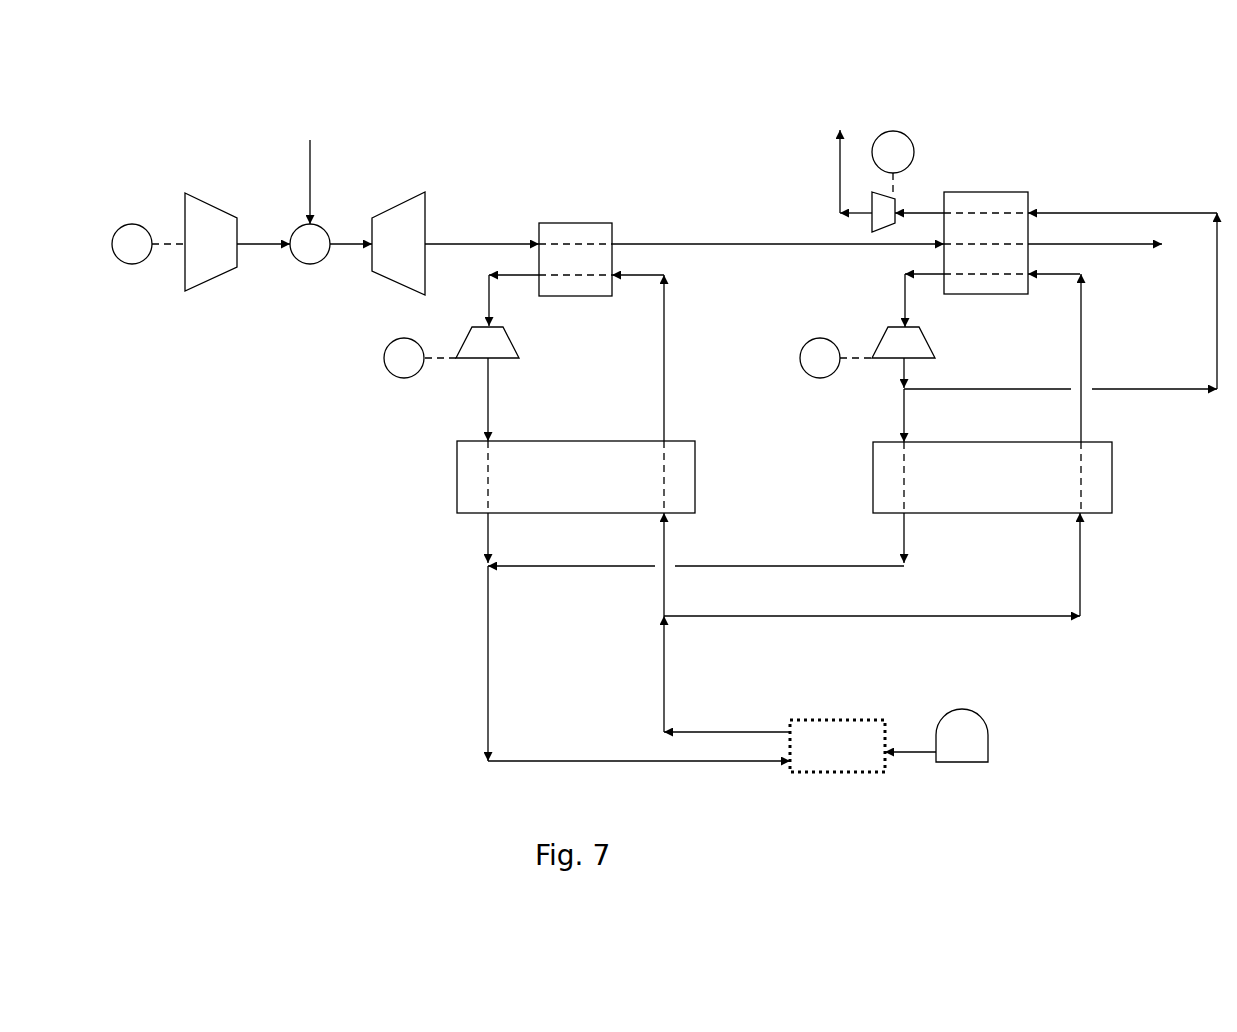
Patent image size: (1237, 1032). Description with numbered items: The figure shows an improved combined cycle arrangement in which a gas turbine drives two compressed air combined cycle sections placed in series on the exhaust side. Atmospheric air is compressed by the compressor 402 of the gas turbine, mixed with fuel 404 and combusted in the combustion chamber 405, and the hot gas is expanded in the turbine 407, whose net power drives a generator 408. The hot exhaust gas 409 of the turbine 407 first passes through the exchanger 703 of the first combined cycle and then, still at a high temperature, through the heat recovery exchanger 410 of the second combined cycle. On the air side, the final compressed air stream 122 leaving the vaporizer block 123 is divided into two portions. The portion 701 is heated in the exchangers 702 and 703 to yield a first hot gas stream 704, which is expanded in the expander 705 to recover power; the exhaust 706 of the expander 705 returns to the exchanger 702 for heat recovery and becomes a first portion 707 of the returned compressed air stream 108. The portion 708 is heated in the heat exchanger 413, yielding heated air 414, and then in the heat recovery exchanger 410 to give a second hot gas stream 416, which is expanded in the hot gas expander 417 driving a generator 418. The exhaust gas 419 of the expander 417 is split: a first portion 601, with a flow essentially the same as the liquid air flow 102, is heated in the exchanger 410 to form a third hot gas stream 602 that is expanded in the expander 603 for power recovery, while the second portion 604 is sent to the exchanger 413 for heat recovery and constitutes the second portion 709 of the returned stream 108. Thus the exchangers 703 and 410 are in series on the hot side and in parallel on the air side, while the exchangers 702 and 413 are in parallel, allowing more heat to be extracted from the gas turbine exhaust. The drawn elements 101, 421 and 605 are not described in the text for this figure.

The feed source 101 is at (967, 720).
The liquid air flow 102 is at (903, 753).
The returned compressed air stream 108 is at (572, 762).
The final compressed air stream 122 is at (667, 688).
The vaporizer block 123 is at (842, 773).
The compressor 402 is at (207, 275).
The fuel 404 is at (309, 171).
The combustion chamber 405 is at (312, 245).
The turbine 407 is at (414, 212).
The generator 408 is at (122, 266).
The exhaust gas 409 is at (508, 242).
The heat recovery exchanger 410 is at (987, 190).
The heat exchanger 413 is at (883, 472).
The heated air 414 is at (1080, 355).
The second hot gas stream 416 is at (903, 293).
The hot gas expander 417 is at (892, 347).
The generator 418 is at (805, 343).
The exhaust gas 419 is at (902, 368).
The outlet line 421 is at (1115, 243).
The first portion 601 is at (1153, 388).
The third hot gas stream 602 is at (933, 213).
The expander 603 is at (883, 212).
The second portion 604 is at (902, 422).
The outlet line 605 is at (838, 182).
The portion 701 is at (663, 575).
The exchanger 702 is at (467, 483).
The exchanger 703 is at (582, 222).
The first hot gas stream 704 is at (487, 305).
The expander 705 is at (509, 347).
The exhaust 706 is at (487, 390).
The first portion 707 is at (487, 523).
The portion 708 is at (1008, 615).
The second portion 709 is at (757, 565).